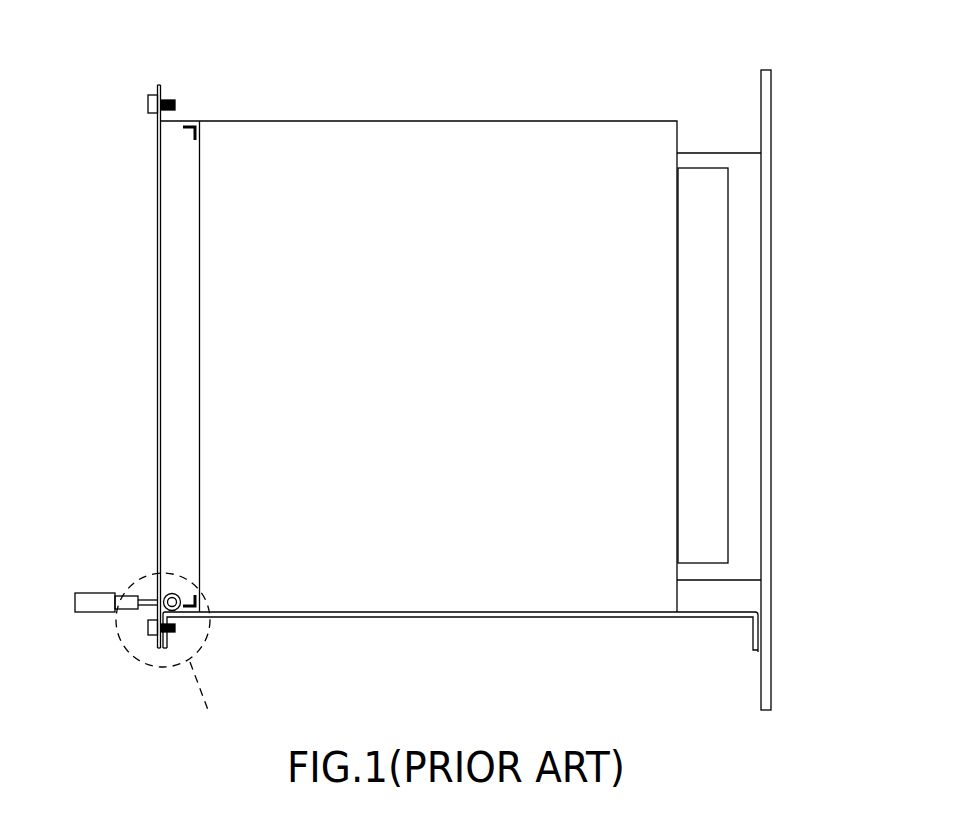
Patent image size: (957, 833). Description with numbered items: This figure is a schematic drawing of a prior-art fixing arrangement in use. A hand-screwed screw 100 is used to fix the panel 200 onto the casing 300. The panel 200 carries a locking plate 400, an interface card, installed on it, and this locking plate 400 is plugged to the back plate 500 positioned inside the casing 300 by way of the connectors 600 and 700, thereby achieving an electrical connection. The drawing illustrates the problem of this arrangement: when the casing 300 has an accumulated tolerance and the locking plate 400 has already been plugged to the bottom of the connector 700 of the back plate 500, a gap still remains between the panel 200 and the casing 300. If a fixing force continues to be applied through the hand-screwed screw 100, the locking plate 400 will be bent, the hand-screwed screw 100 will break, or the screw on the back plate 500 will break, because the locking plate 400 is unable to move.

The hand-screwed screw 100 is at (148, 629).
The panel 200 is at (157, 366).
The casing 300 is at (312, 619).
The locking plate 400 is at (438, 120).
The back plate 500 is at (771, 293).
The connector 600 is at (703, 167).
The connector 700 is at (717, 582).